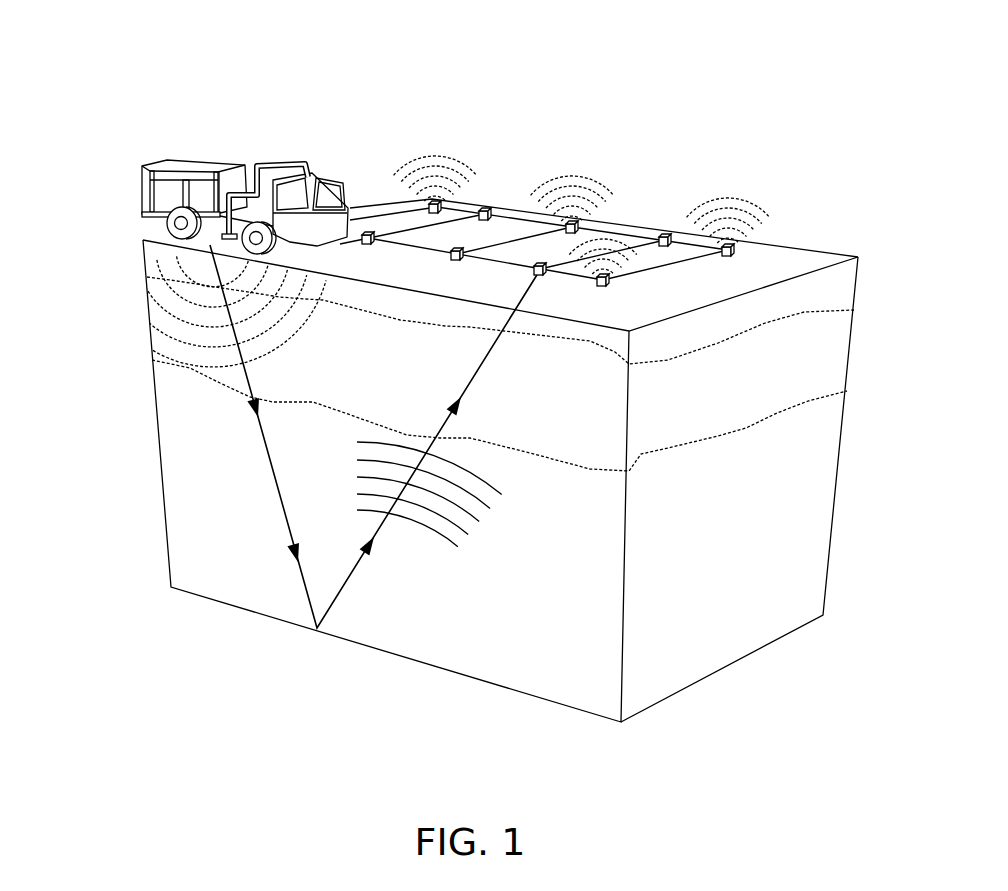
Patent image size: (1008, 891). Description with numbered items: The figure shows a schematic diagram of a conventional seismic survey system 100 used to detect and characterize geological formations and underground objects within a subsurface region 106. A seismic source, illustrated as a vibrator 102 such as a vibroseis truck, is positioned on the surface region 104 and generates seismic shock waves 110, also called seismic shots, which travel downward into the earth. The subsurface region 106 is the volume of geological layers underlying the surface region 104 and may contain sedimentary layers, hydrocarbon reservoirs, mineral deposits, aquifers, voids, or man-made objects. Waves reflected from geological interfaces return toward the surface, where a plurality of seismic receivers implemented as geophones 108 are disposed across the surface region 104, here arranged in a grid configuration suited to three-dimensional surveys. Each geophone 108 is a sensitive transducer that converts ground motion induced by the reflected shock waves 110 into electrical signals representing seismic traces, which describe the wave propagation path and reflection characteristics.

The seismic survey system 100 is at (398, 66).
The vibrator 102 is at (210, 165).
The surface region 104 is at (160, 260).
The subsurface region 106 is at (755, 578).
The geophones 108 is at (723, 197).
The seismic shock waves 110 is at (265, 444).